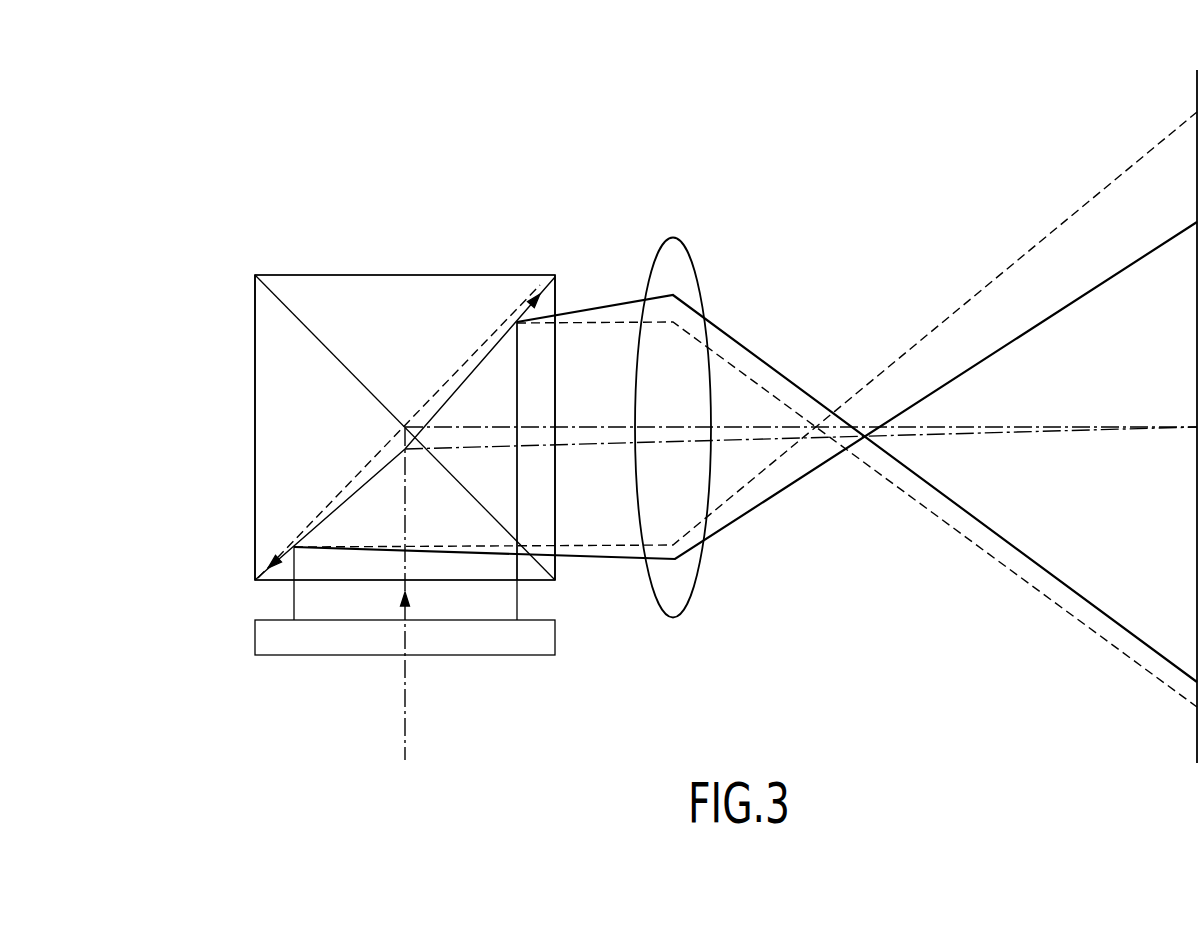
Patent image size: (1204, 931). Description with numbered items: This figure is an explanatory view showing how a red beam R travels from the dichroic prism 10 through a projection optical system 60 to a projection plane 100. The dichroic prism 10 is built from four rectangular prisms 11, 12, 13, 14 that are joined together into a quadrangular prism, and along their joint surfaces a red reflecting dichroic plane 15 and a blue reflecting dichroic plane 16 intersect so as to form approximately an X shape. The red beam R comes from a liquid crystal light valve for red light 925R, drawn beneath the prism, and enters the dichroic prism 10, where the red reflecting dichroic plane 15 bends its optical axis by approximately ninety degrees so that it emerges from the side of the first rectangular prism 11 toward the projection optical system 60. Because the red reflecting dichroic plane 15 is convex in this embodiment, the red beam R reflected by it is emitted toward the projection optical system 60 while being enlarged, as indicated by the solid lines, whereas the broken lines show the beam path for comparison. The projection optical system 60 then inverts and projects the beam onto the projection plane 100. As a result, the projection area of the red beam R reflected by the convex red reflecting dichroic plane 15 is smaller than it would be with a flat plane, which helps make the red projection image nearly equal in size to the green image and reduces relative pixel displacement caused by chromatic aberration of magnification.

The dichroic prism 10 is at (512, 226).
The first rectangular prism 11 is at (545, 335).
The rectangular prism 12 is at (413, 567).
The rectangular prism 13 is at (268, 455).
The rectangular prism 14 is at (362, 282).
The red reflecting dichroic plane 15 is at (331, 525).
The blue reflecting dichroic plane 16 is at (286, 284).
The projection optical system 60 is at (745, 188).
The projection plane 100 is at (1197, 96).
The liquid crystal light valve for red light 925R is at (520, 642).
The red beam R is at (410, 505).